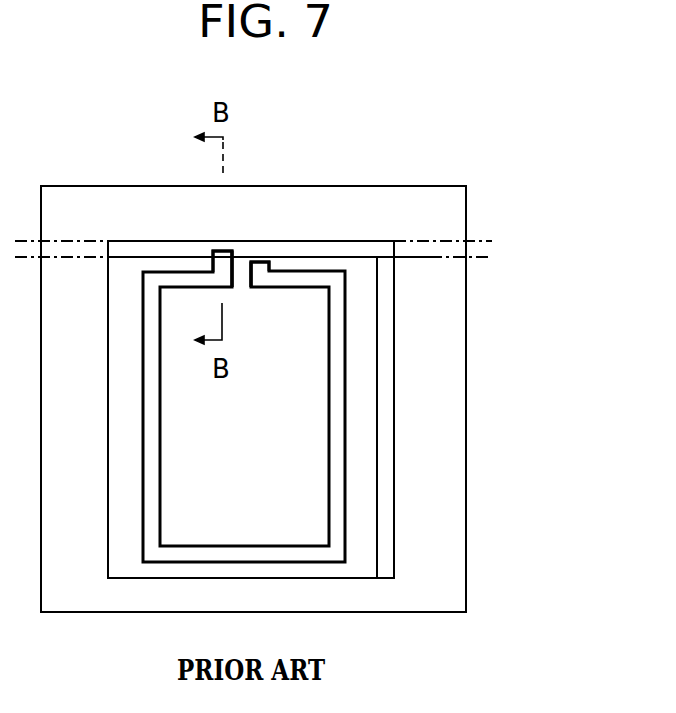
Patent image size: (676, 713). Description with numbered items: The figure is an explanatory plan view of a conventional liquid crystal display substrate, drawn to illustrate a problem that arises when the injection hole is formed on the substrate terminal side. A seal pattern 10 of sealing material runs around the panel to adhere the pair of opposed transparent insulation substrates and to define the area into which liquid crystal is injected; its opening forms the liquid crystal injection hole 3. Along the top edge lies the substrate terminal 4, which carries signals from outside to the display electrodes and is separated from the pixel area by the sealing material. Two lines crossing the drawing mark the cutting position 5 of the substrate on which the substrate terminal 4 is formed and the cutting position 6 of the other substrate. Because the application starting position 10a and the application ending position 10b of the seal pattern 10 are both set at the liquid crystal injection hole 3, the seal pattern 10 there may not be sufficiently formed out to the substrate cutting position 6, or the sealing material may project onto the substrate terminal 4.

The liquid crystal injection hole 3 is at (241, 268).
The substrate terminal 4 is at (360, 248).
The cutting position of the transparent insulation substrate 5 is at (480, 242).
The cutting position of the other transparent insulation substrate 6 is at (480, 258).
The seal pattern 10 is at (337, 483).
The application starting position 10a is at (260, 268).
The application ending position 10b is at (221, 257).